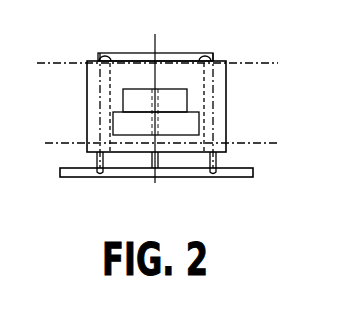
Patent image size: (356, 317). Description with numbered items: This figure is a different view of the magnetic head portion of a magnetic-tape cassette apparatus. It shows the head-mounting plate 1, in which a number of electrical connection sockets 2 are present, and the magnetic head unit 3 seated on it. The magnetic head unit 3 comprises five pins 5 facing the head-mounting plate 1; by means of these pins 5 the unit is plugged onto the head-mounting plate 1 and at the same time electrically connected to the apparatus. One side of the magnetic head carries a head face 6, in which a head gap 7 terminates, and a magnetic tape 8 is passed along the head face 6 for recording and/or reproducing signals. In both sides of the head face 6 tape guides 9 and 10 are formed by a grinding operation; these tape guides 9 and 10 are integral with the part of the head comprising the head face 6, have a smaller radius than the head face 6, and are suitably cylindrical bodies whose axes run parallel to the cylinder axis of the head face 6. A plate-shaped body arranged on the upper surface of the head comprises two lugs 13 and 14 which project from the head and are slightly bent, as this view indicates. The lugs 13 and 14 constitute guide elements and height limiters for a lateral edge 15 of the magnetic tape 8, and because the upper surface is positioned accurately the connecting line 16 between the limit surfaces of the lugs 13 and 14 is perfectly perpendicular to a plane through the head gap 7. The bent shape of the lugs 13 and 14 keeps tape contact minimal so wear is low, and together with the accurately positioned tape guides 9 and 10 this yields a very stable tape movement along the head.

The head-mounting plate 1 is at (245, 171).
The electrical connection sockets 2 is at (100, 172).
The magnetic head unit 3 is at (68, 121).
The pins 5 is at (212, 160).
The head face 6 is at (183, 128).
The head gap 7 is at (155, 118).
The magnetic tape 8 is at (55, 73).
The tape guide 9 is at (205, 90).
The tape guide 10 is at (102, 108).
The lug 13 is at (202, 55).
The lug 14 is at (108, 54).
The lateral edge 15 is at (245, 62).
The connecting line 16 is at (165, 62).